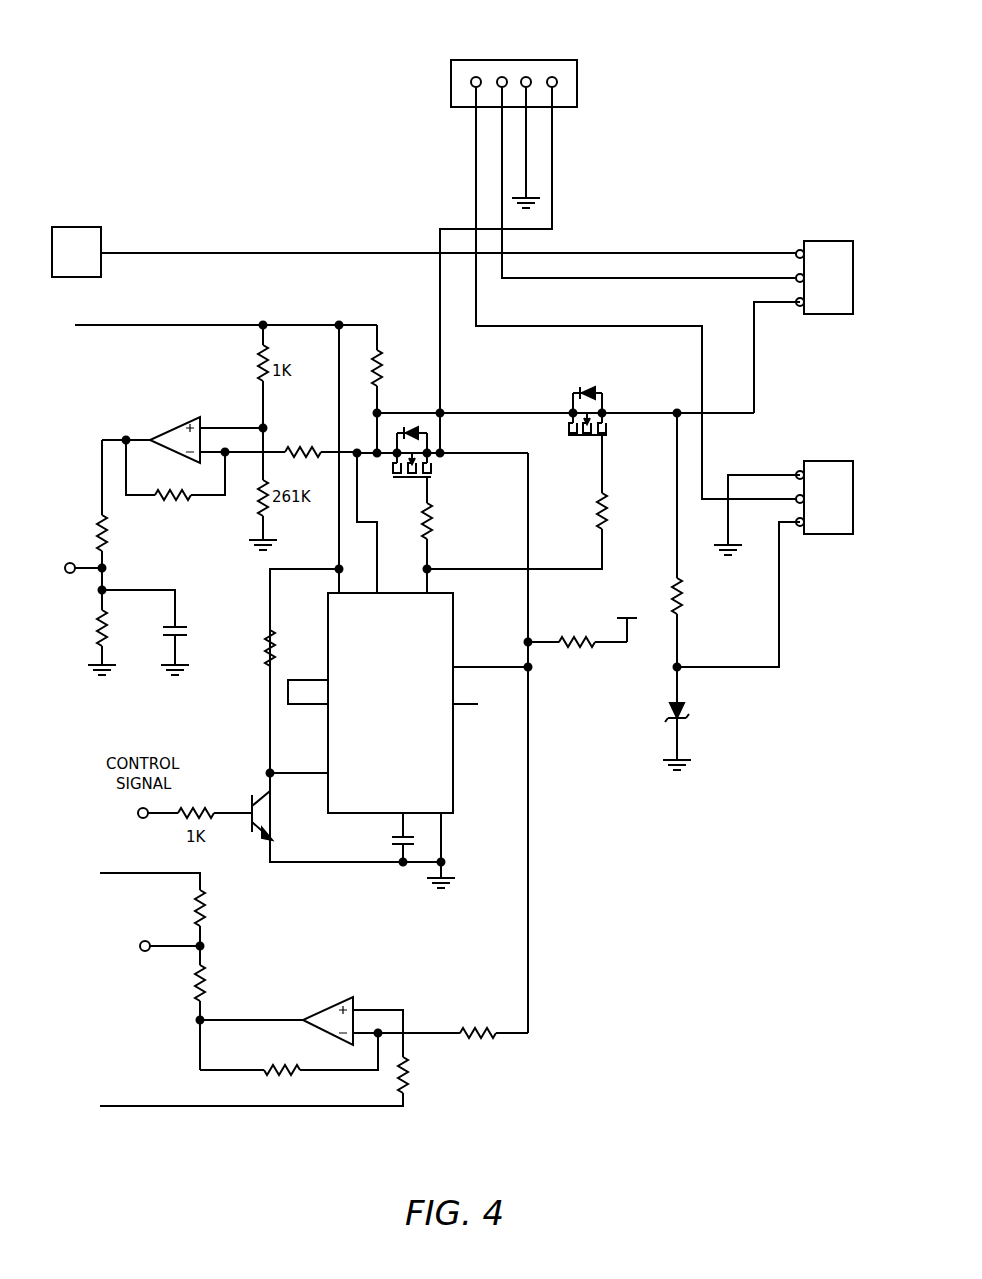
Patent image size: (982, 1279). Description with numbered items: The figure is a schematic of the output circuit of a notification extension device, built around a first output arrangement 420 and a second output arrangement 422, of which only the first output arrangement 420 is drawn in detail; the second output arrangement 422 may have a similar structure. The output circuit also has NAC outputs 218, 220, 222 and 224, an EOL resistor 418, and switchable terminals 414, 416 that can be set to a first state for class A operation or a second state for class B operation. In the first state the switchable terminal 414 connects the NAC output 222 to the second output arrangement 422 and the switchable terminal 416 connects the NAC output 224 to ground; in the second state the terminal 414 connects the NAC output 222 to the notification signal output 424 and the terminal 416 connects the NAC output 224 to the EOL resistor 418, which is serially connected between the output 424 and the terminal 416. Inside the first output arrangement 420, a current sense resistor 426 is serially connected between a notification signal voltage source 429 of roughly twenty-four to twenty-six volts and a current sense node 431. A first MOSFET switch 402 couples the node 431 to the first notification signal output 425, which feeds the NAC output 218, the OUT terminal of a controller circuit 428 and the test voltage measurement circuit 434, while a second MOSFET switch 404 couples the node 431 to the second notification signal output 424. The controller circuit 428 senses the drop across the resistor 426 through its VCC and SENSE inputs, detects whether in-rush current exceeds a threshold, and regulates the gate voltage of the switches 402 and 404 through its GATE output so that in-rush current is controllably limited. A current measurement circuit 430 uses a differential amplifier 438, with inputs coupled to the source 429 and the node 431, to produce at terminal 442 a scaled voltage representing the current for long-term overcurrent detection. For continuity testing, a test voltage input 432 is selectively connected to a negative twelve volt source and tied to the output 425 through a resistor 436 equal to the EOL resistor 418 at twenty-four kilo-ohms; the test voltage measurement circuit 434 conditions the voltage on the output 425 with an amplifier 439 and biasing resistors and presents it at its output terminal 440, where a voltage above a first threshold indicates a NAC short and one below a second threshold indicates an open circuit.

The NAC output 218 is at (555, 77).
The NAC output 220 is at (527, 77).
The NAC output 222 is at (500, 78).
The NAC output 224 is at (470, 77).
The first semiconductor switch 402 is at (433, 437).
The second semiconductor switch 404 is at (606, 398).
The switchable terminal 414 is at (830, 240).
The switchable terminal 416 is at (830, 460).
The EOL resistor 418 is at (685, 612).
The first output arrangement 420 is at (655, 912).
The second output arrangement 422 is at (75, 227).
The notification signal output 424 is at (677, 418).
The first notification signal output 425 is at (528, 478).
The current sense resistor 426 is at (383, 352).
The controller circuit 428 is at (455, 752).
The notification signal voltage source 429 is at (195, 322).
The current measurement circuit 430 is at (198, 543).
The current sense node 431 is at (378, 462).
The test voltage input 432 is at (635, 652).
The test voltage measurement circuit 434 is at (472, 1097).
The resistor 436 is at (580, 652).
The differential amplifier 438 is at (178, 420).
The operational amplifier 439 is at (325, 1000).
The output terminal 440 is at (145, 955).
The terminal 442 is at (68, 562).